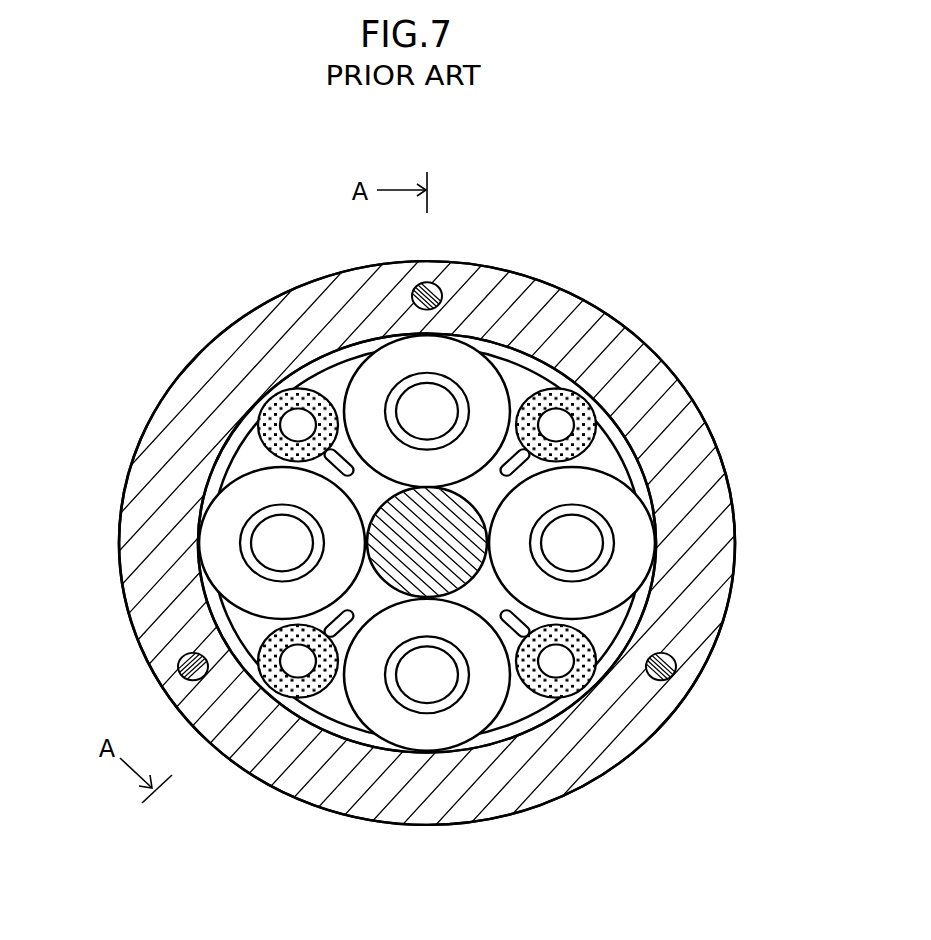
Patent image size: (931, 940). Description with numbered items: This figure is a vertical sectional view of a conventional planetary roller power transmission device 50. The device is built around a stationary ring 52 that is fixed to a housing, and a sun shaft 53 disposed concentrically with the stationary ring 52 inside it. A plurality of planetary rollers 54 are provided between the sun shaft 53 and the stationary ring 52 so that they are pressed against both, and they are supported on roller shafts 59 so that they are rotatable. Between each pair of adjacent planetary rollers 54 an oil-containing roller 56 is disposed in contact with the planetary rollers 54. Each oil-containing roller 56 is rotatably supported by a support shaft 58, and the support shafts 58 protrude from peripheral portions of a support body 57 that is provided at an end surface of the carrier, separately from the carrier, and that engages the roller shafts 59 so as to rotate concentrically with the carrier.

The planetary roller power transmission device 50 is at (572, 273).
The stationary ring 52 is at (648, 380).
The sun shaft 53 is at (462, 531).
The planetary roller 54 is at (380, 362).
The oil-containing roller 56 is at (285, 385).
The support body 57 is at (612, 455).
The support shaft 58 is at (293, 425).
The roller shaft 59 is at (443, 403).